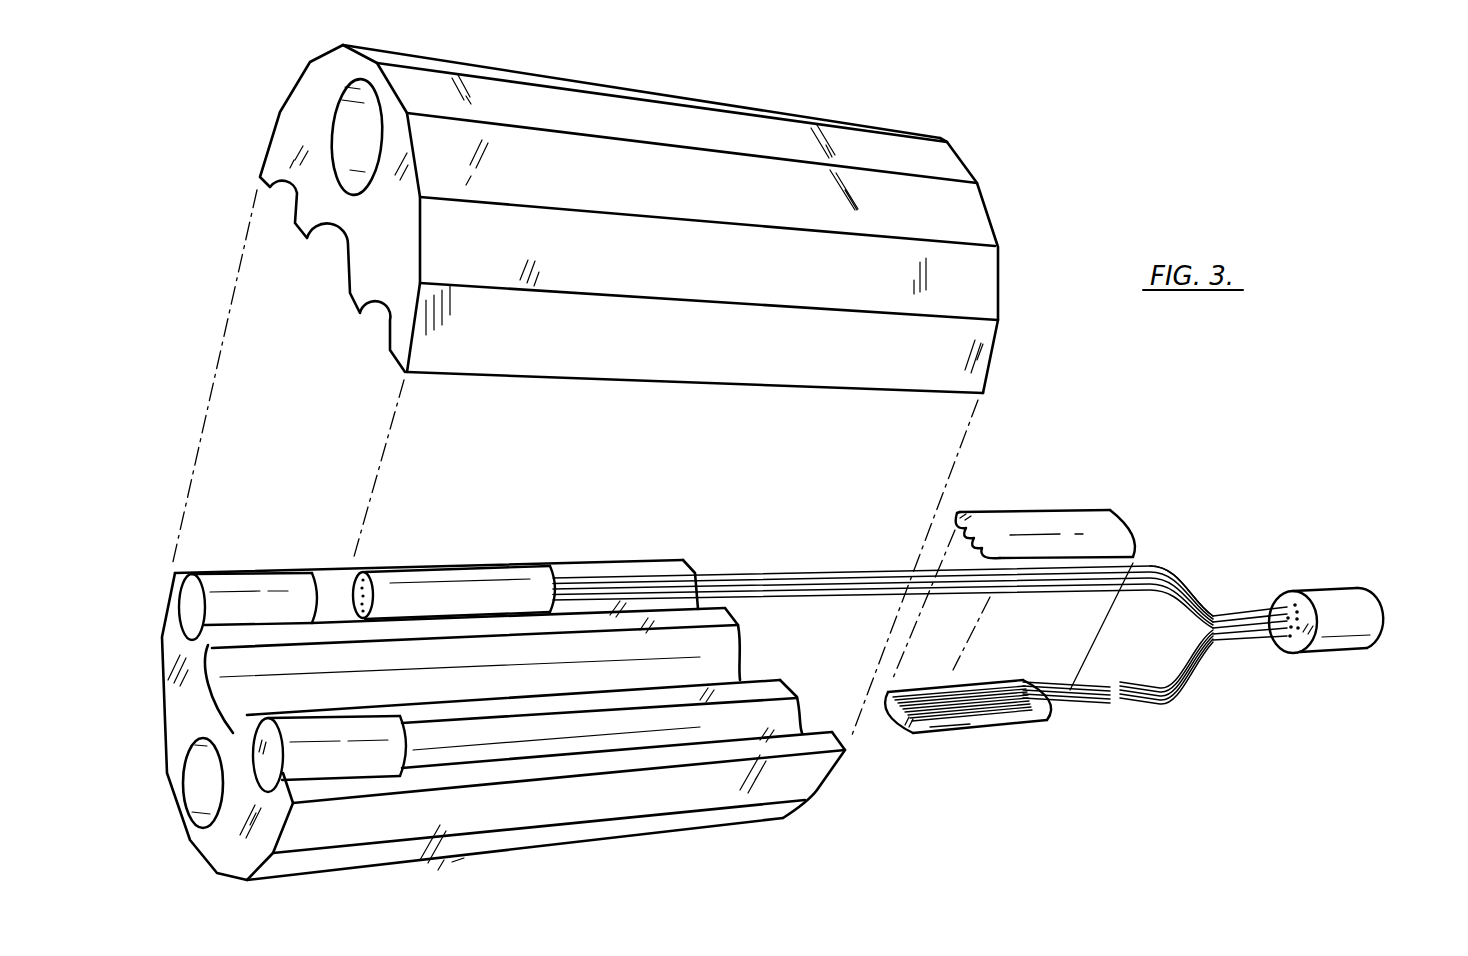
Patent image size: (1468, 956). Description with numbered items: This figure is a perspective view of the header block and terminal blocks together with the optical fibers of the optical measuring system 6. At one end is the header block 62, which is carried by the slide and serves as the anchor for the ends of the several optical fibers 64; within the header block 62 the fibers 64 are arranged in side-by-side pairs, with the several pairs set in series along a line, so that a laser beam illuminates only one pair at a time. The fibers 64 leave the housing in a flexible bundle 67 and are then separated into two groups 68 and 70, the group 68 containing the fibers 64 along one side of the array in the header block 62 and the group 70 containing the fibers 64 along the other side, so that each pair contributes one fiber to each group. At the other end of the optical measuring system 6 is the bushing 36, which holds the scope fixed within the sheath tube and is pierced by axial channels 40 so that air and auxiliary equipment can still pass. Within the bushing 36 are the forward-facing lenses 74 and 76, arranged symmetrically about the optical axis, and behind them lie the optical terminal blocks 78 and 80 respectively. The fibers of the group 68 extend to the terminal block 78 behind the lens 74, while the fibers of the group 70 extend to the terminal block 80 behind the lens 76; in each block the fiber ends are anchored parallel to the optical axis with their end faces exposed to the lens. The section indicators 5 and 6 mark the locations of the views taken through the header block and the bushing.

The bushing 36 is at (978, 215).
The axial channel 40 is at (345, 125).
The lens 74 is at (238, 586).
The optical terminal block 78 is at (467, 582).
The lens 76 is at (350, 766).
The optical fiber 64 is at (793, 585).
The group of fibers 70 is at (1160, 702).
The group of fibers 68 is at (1158, 567).
The flexible bundle 67 is at (1250, 613).
The header block 62 is at (1377, 623).
The optical terminal block 80 is at (1050, 520).
The optical measuring system 6 is at (257, 450).
The section line 5 is at (1455, 542).